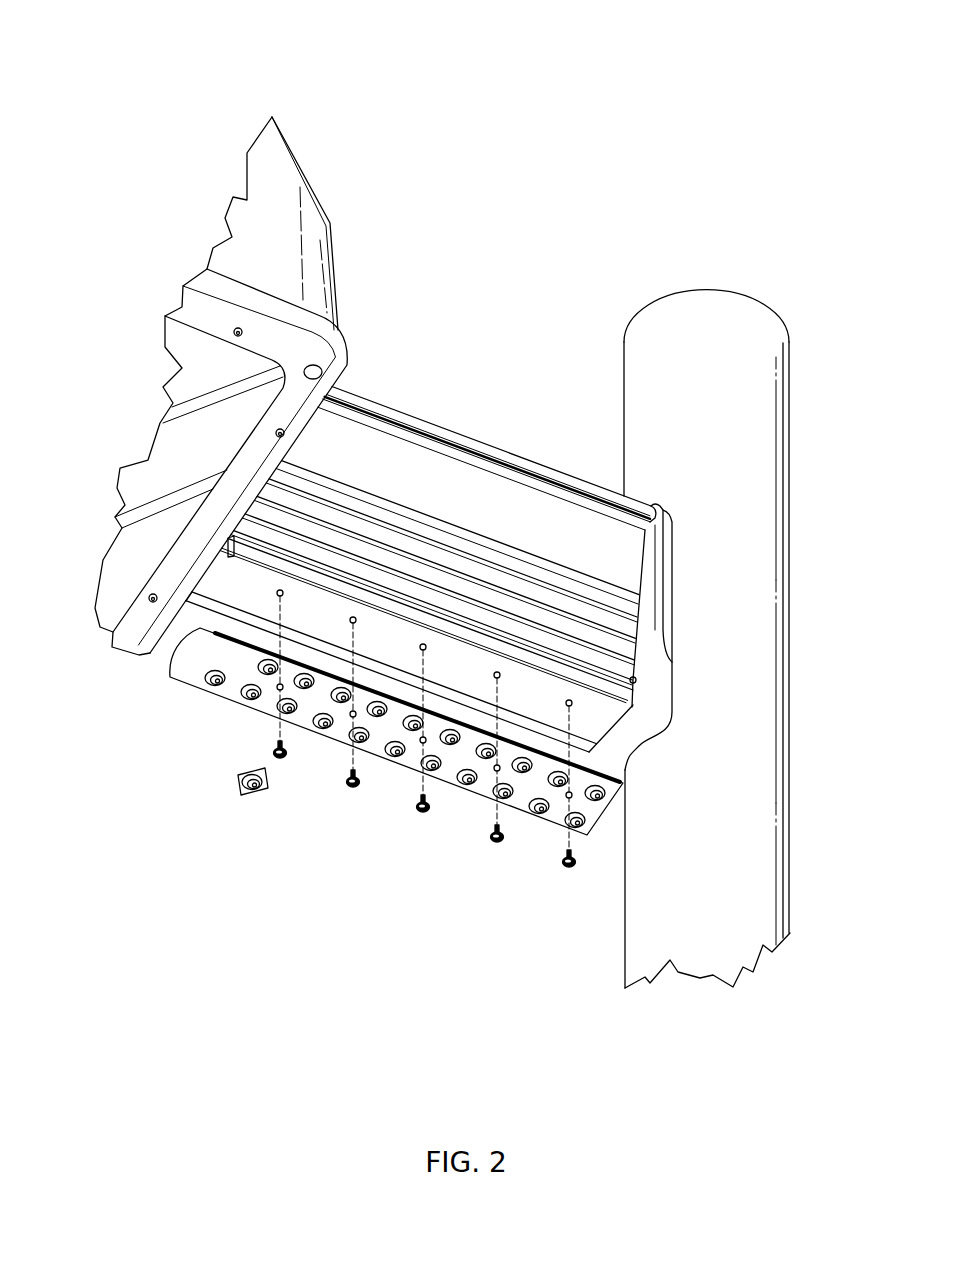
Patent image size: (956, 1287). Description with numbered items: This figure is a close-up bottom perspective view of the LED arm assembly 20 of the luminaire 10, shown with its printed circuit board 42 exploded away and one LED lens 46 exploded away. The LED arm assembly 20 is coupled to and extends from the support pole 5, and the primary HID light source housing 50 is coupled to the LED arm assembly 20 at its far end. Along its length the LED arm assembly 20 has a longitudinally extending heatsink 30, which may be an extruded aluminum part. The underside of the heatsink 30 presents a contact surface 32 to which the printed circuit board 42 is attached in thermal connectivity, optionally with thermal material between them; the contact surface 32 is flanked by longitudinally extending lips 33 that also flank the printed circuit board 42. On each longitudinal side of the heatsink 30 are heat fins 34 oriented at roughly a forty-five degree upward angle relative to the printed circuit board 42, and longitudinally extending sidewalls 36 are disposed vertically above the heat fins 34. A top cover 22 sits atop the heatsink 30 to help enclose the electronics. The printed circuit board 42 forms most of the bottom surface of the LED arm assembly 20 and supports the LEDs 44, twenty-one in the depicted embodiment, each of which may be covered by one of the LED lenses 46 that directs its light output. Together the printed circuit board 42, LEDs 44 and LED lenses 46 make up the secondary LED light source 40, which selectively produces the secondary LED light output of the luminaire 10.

The luminaire 10 is at (489, 95).
The support pole 5 is at (757, 417).
The primary HID light source housing 50 is at (138, 171).
The contact surface 32 is at (138, 635).
The heatsink 30 is at (195, 627).
The LED arm assembly 20 is at (507, 383).
The top cover 22 is at (428, 420).
The sidewalls 36 is at (497, 487).
The heat fins 34 is at (610, 618).
The lips 33 is at (613, 693).
The secondary LED light source 40 is at (280, 827).
The printed circuit board 42 is at (302, 722).
The LEDs 44 is at (252, 694).
The LED lenses 46 is at (210, 693).